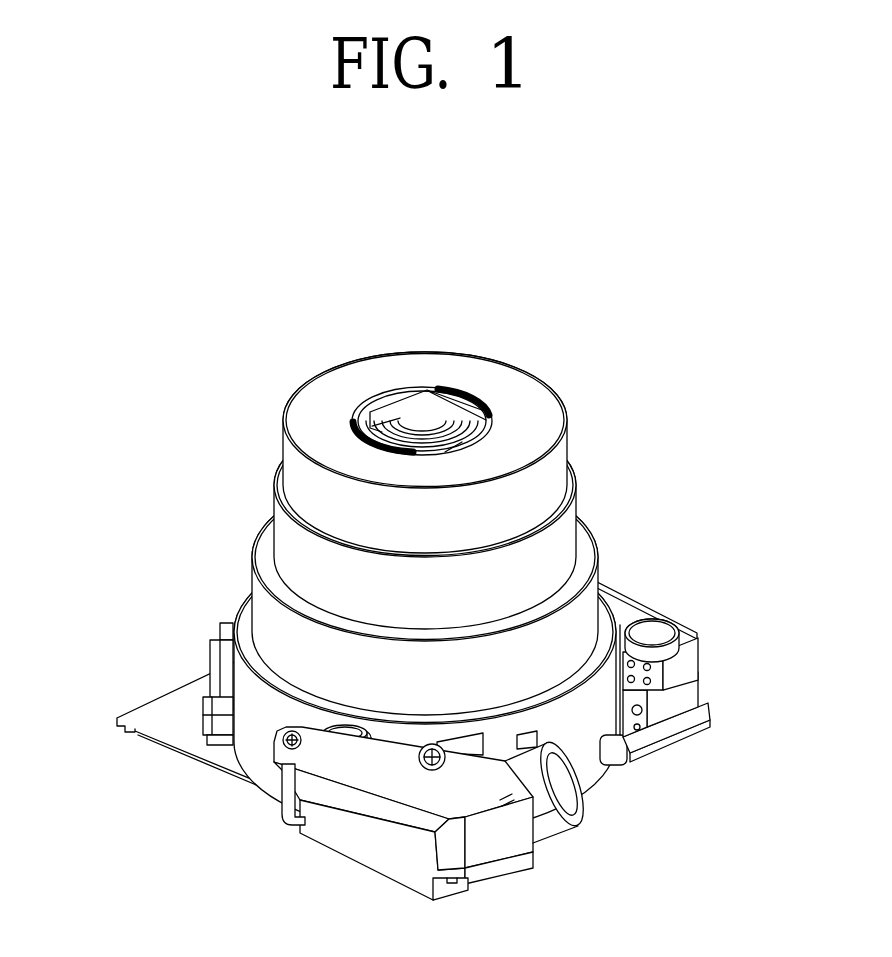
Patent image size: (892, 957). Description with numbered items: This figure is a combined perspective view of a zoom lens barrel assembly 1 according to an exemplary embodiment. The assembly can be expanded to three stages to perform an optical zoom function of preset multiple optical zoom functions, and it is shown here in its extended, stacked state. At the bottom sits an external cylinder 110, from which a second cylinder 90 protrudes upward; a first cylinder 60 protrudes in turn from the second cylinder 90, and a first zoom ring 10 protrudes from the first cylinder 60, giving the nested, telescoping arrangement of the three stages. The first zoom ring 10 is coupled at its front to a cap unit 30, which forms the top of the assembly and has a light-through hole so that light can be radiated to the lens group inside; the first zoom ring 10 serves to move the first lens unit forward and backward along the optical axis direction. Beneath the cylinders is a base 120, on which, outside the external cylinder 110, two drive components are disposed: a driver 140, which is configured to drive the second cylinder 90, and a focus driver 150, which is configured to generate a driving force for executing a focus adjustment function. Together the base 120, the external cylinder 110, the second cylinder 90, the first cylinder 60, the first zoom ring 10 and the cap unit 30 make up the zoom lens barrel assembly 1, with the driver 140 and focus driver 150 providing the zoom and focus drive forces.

The zoom lens barrel assembly 1 is at (439, 229).
The first zoom ring 10 is at (477, 499).
The cap unit 30 is at (547, 415).
The first cylinder 60 is at (589, 482).
The second cylinder 90 is at (610, 559).
The external cylinder 110 is at (583, 715).
The base 120 is at (692, 725).
The driver 140 is at (547, 772).
The focus driver 150 is at (660, 625).